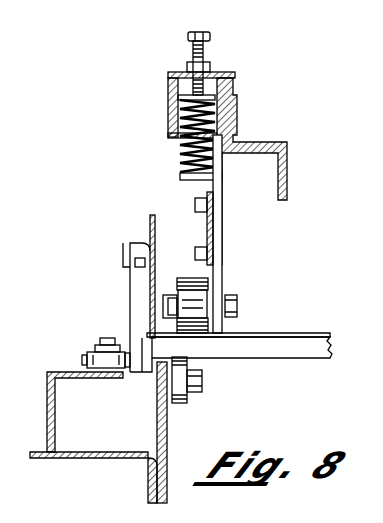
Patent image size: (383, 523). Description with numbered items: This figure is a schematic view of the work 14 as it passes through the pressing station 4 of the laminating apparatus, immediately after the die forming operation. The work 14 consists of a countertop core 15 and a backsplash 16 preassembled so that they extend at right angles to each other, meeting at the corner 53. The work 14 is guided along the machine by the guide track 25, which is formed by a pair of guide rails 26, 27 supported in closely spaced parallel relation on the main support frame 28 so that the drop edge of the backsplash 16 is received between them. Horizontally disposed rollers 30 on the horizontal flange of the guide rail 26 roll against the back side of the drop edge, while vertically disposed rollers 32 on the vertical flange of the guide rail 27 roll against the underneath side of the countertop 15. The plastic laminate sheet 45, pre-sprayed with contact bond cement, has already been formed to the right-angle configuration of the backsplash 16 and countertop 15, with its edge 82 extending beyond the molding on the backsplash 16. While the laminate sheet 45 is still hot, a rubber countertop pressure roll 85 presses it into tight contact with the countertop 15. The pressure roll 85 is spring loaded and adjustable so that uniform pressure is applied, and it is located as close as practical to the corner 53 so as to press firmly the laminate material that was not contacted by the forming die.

The pressing station 4 is at (121, 226).
The work 14 is at (290, 363).
The countertop core 15 is at (297, 343).
The backsplash 16 is at (140, 283).
The guide track 25 is at (46, 405).
The guide rail 26 is at (55, 415).
The guide rail 27 is at (167, 425).
The main support frame 28 is at (105, 459).
The rollers 30 is at (86, 356).
The rollers 32 is at (187, 400).
The plastic laminate sheet 45 is at (257, 333).
The corner 53 is at (150, 332).
The edge of laminate sheet 82 is at (150, 217).
The countertop pressure roll 85 is at (190, 282).